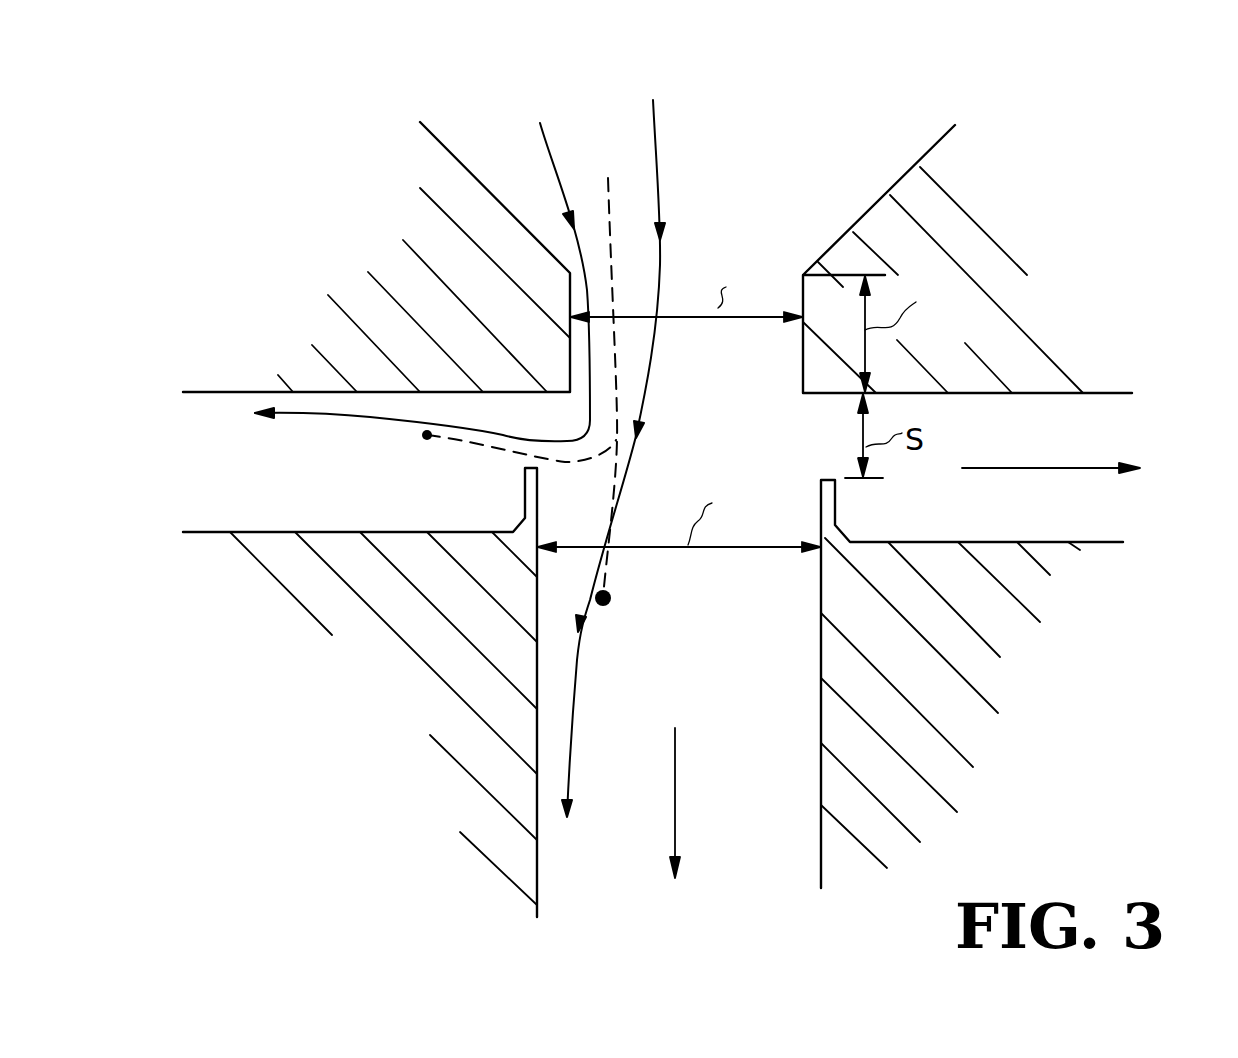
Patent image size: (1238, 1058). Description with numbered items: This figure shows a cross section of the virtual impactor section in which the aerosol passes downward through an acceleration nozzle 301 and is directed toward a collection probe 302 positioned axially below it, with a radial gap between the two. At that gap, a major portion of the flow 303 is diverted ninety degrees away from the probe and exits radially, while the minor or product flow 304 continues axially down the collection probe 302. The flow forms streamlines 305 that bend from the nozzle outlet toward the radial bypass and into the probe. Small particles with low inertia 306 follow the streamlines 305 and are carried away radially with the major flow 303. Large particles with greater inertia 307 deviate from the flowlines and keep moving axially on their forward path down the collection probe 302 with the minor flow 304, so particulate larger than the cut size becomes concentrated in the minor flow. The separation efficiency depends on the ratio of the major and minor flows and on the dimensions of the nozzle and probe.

The acceleration nozzle 301 is at (770, 377).
The collection probe 302 is at (767, 700).
The major portion of the flow 303 is at (1087, 465).
The minor or product flow 304 is at (675, 803).
The streamlines 305 is at (592, 393).
The small particles with low inertia 306 is at (427, 439).
The large particles with greater inertia 307 is at (611, 598).